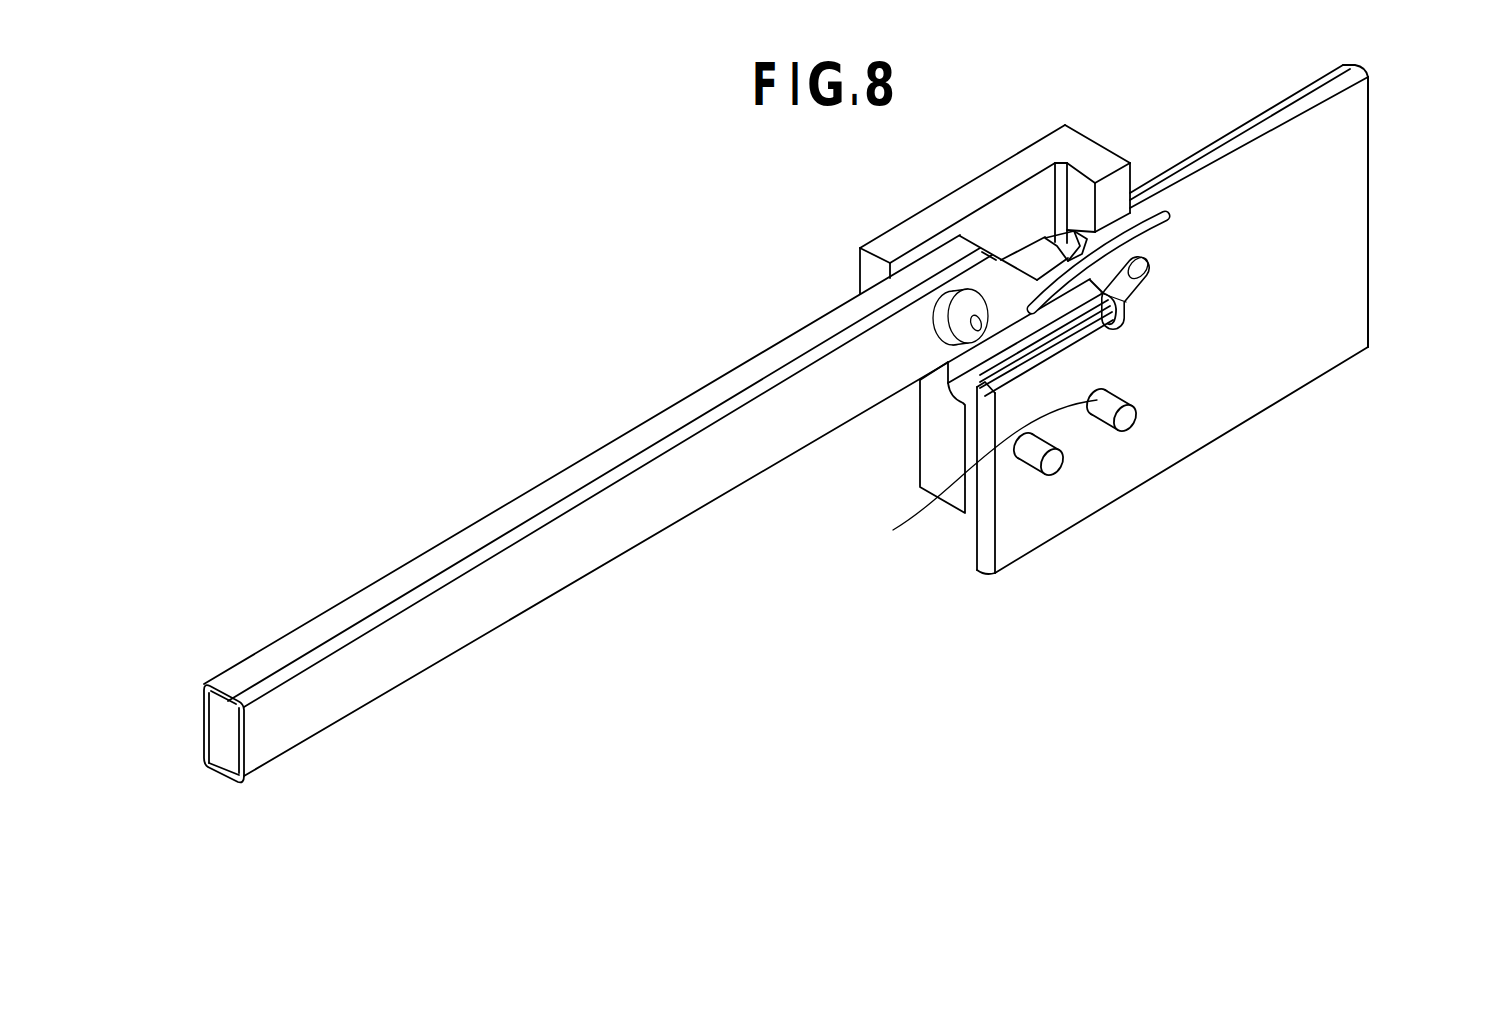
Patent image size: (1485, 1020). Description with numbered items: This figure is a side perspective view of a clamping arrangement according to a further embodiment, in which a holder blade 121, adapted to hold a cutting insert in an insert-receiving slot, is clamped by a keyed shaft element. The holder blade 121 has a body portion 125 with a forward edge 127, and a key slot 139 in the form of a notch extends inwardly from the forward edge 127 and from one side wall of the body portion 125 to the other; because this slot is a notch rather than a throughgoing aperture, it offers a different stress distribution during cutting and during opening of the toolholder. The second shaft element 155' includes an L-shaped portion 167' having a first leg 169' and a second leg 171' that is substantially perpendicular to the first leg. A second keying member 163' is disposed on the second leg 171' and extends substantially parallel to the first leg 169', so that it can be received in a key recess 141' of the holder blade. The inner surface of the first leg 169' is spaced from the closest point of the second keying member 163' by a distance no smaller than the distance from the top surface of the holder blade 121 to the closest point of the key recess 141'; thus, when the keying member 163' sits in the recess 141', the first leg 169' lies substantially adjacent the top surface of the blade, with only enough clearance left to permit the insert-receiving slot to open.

The holder blade 121 is at (1394, 254).
The body portion 125 is at (1345, 199).
The forward edge 127 is at (985, 567).
The key slot 139 is at (1175, 212).
The key recess 141' is at (994, 433).
The second shaft element 155' is at (963, 186).
The second keying member 163' is at (1134, 451).
The L-shaped portion 167' is at (1030, 167).
The first leg 169' is at (1111, 159).
The second leg 171' is at (895, 437).